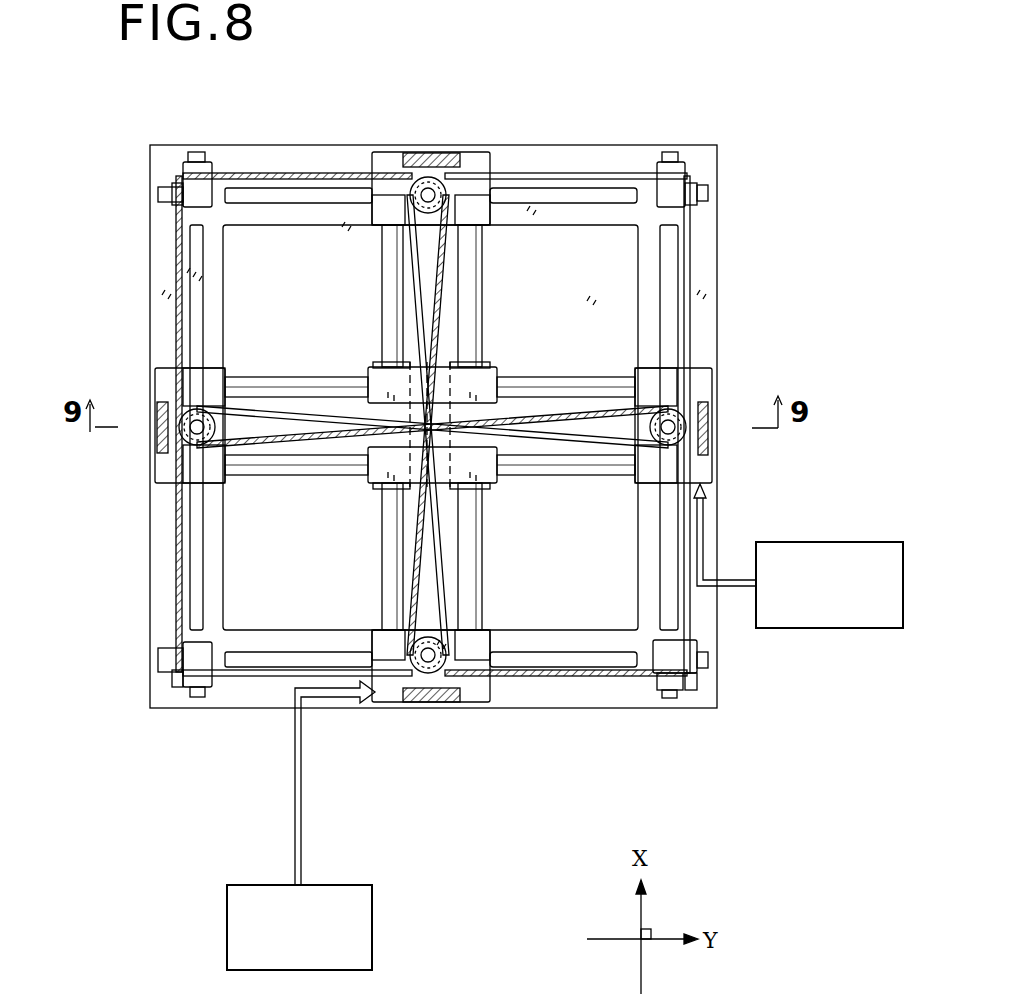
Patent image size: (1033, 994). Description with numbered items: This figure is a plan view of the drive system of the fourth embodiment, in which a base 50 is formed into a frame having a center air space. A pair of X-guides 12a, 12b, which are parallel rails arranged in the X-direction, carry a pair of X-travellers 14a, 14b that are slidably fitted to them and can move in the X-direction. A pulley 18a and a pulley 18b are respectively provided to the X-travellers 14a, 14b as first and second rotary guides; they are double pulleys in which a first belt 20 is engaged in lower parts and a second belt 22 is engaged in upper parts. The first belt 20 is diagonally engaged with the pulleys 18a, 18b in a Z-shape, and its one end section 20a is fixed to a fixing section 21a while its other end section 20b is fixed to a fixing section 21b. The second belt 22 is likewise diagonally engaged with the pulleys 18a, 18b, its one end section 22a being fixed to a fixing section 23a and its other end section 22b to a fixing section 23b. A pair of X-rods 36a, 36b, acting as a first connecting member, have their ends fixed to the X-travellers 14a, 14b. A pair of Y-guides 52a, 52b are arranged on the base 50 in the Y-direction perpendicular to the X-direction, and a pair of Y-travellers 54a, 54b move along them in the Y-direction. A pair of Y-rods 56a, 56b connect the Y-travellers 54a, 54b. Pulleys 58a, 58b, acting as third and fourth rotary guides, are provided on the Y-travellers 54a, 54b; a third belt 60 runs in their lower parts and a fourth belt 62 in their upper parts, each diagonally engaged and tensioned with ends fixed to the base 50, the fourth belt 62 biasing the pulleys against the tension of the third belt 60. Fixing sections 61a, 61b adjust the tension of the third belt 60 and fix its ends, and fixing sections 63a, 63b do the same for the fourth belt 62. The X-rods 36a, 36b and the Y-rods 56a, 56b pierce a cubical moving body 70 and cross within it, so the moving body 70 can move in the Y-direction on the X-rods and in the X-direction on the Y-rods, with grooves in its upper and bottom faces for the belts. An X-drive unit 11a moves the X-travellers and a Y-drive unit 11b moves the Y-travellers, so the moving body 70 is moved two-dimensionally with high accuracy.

The X-drive unit 11a is at (863, 628).
The Y-drive unit 11b is at (372, 920).
The X-guide 12a is at (196, 245).
The X-guide 12b is at (670, 325).
The X-traveller 14a is at (170, 378).
The X-traveller 14b is at (700, 388).
The pulley 18a is at (192, 440).
The pulley 18b is at (672, 445).
The first belt 20 is at (565, 412).
The end section of first belt 20a is at (178, 200).
The end section of first belt 20b is at (702, 652).
The fixing section 21a is at (165, 190).
The fixing section 21b is at (690, 682).
The second belt 22 is at (560, 450).
The end section of second belt 22a is at (165, 655).
The end section of second belt 22b is at (692, 200).
The fixing section 23a is at (170, 688).
The fixing section 23b is at (700, 188).
The X-rod 36a is at (262, 385).
The X-rod 36b is at (270, 470).
The base 50 is at (160, 268).
The Y-guide 52a is at (300, 192).
The Y-guide 52b is at (270, 660).
The Y-traveller 54a is at (410, 165).
The Y-traveller 54b is at (418, 702).
The Y-rod 56a is at (388, 262).
The Y-rod 56b is at (478, 295).
The pulley 58a is at (470, 288).
The pulley 58b is at (478, 665).
The third belt 60 is at (405, 548).
The fixing section 61a is at (200, 165).
The fixing section 61b is at (690, 695).
The fourth belt 62 is at (465, 546).
The fixing section 63a is at (195, 690).
The fixing section 63b is at (672, 165).
The moving body 70 is at (505, 360).